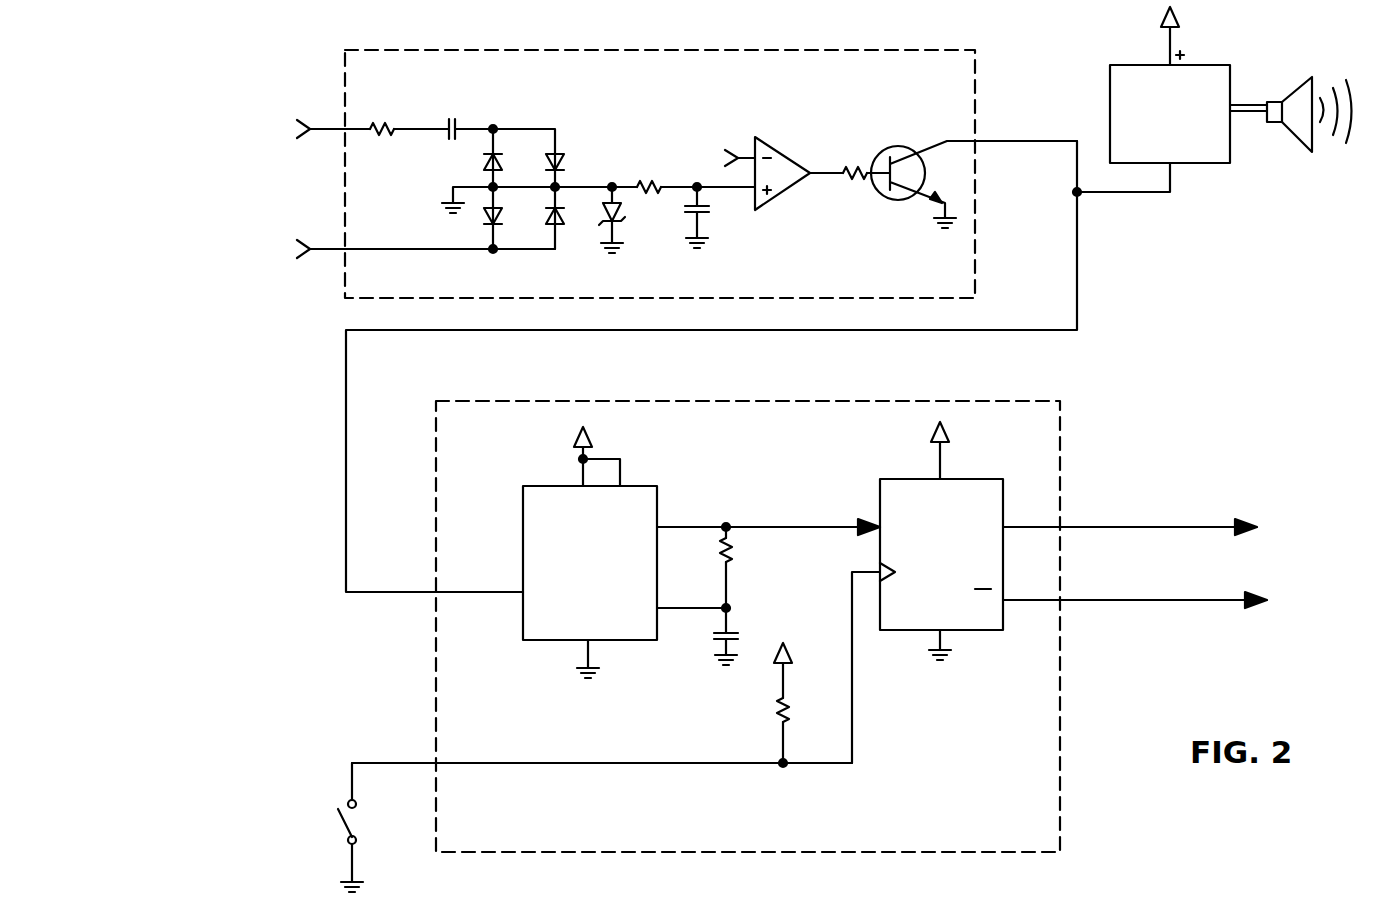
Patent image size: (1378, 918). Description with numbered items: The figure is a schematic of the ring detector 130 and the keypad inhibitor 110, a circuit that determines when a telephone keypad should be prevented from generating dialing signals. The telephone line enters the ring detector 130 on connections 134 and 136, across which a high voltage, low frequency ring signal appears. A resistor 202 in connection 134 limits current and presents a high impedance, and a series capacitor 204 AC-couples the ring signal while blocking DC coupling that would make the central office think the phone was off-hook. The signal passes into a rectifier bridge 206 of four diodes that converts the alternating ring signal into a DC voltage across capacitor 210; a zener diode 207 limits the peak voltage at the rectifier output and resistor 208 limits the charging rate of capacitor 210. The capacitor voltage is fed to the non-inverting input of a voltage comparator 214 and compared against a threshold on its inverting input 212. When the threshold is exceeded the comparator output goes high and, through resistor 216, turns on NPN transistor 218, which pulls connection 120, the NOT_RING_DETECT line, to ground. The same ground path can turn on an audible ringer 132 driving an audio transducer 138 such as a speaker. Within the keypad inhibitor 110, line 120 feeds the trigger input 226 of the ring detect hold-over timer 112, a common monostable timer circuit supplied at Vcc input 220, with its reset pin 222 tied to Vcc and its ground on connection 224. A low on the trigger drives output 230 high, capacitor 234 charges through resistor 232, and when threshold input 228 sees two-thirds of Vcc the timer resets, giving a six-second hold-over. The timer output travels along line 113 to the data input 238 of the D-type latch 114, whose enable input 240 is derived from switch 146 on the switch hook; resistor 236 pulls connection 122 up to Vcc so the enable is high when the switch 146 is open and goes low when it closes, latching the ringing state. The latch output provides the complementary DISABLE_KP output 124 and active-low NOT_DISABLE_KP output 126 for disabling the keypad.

The keypad inhibitor 110 is at (1060, 441).
The ring detect hold-over timer 112 is at (523, 500).
The line 113 is at (797, 524).
The latch 114 is at (949, 616).
The connection 120 is at (346, 474).
The connection 122 is at (395, 763).
The DISABLE_KP output 124 is at (1218, 520).
The NOT_DISABLE_KP output 126 is at (1235, 596).
The ring detector 130 is at (975, 76).
The audible ringer 132 is at (1200, 63).
The connection 134 is at (322, 128).
The connection 136 is at (322, 248).
The audio transducer 138 is at (1302, 146).
The switch 146 is at (338, 826).
The resistor 202 is at (378, 136).
The capacitor 204 is at (457, 121).
The rectifier bridge 206 is at (543, 199).
The zener diode 207 is at (608, 205).
The resistor 208 is at (643, 182).
The capacitor 210 is at (712, 214).
The inverting input 212 is at (740, 150).
The voltage comparator 214 is at (788, 192).
The resistor 216 is at (853, 163).
The transistor 218 is at (903, 146).
The Vcc input 220 is at (578, 484).
The reset pin 222 is at (624, 484).
The ground connection 224 is at (586, 646).
The trigger input 226 is at (522, 590).
The threshold input 228 is at (661, 602).
The output 230 is at (663, 524).
The resistor 232 is at (733, 556).
The capacitor 234 is at (738, 633).
The resistor 236 is at (778, 710).
The data input 238 is at (876, 520).
The enable input 240 is at (880, 570).